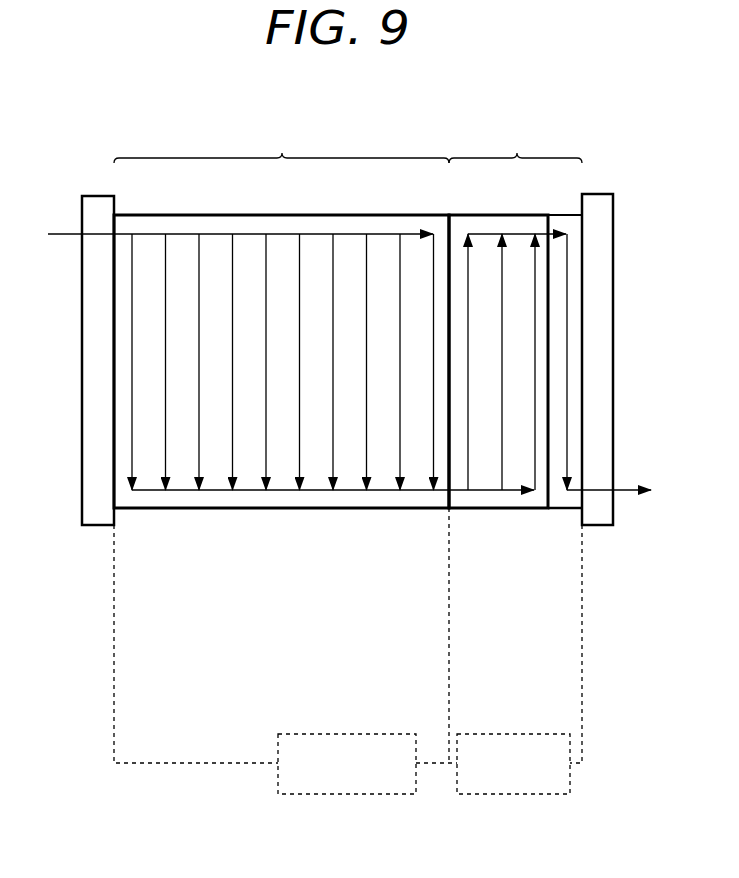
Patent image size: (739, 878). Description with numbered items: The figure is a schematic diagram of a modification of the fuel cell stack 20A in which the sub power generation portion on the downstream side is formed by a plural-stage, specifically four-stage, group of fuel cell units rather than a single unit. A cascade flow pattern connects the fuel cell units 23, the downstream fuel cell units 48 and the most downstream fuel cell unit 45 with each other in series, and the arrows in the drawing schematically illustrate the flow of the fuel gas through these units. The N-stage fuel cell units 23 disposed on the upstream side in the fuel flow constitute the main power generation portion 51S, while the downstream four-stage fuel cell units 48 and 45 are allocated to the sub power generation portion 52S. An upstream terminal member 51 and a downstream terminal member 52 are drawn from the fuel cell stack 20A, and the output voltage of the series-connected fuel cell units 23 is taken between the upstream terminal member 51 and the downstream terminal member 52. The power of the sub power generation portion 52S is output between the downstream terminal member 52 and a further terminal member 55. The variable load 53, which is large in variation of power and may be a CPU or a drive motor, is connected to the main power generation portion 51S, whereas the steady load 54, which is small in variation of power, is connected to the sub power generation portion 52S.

The fuel cell stack 20A is at (457, 117).
The fuel cell units 23 is at (165, 313).
The most downstream fuel cell unit 45 is at (573, 317).
The fuel cell units 48 is at (502, 387).
The upstream terminal member 51 is at (114, 576).
The downstream terminal member 52 is at (448, 620).
The terminal member 55 is at (583, 608).
The variable load 53 is at (397, 794).
The steady load 54 is at (552, 794).
The main power generation portion 51S is at (281, 143).
The sub power generation portion 52S is at (515, 143).